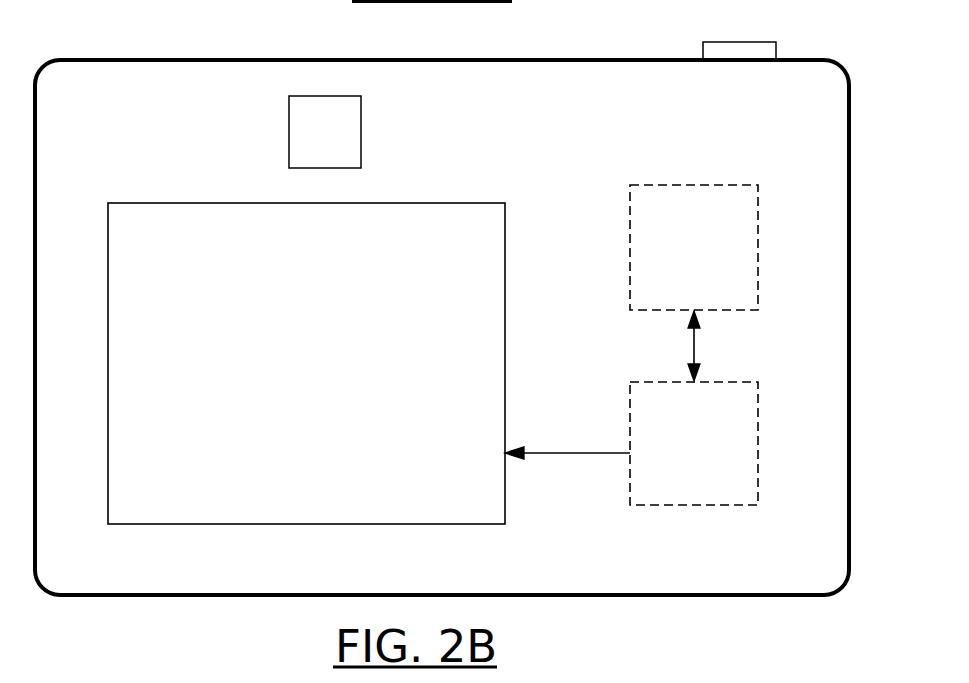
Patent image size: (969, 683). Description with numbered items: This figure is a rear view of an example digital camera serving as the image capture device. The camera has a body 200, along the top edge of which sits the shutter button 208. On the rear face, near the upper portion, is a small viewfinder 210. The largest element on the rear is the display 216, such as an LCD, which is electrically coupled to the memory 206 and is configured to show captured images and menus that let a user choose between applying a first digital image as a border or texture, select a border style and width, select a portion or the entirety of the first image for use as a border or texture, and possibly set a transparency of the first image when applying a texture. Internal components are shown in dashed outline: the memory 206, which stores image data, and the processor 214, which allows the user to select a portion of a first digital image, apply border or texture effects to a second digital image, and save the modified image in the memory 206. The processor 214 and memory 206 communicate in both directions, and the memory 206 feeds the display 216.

The body 200 is at (442, 327).
The memory 206 is at (694, 443).
The shutter button 208 is at (738, 42).
The viewfinder 210 is at (325, 132).
The processor 214 is at (694, 247).
The display 216 is at (306, 363).